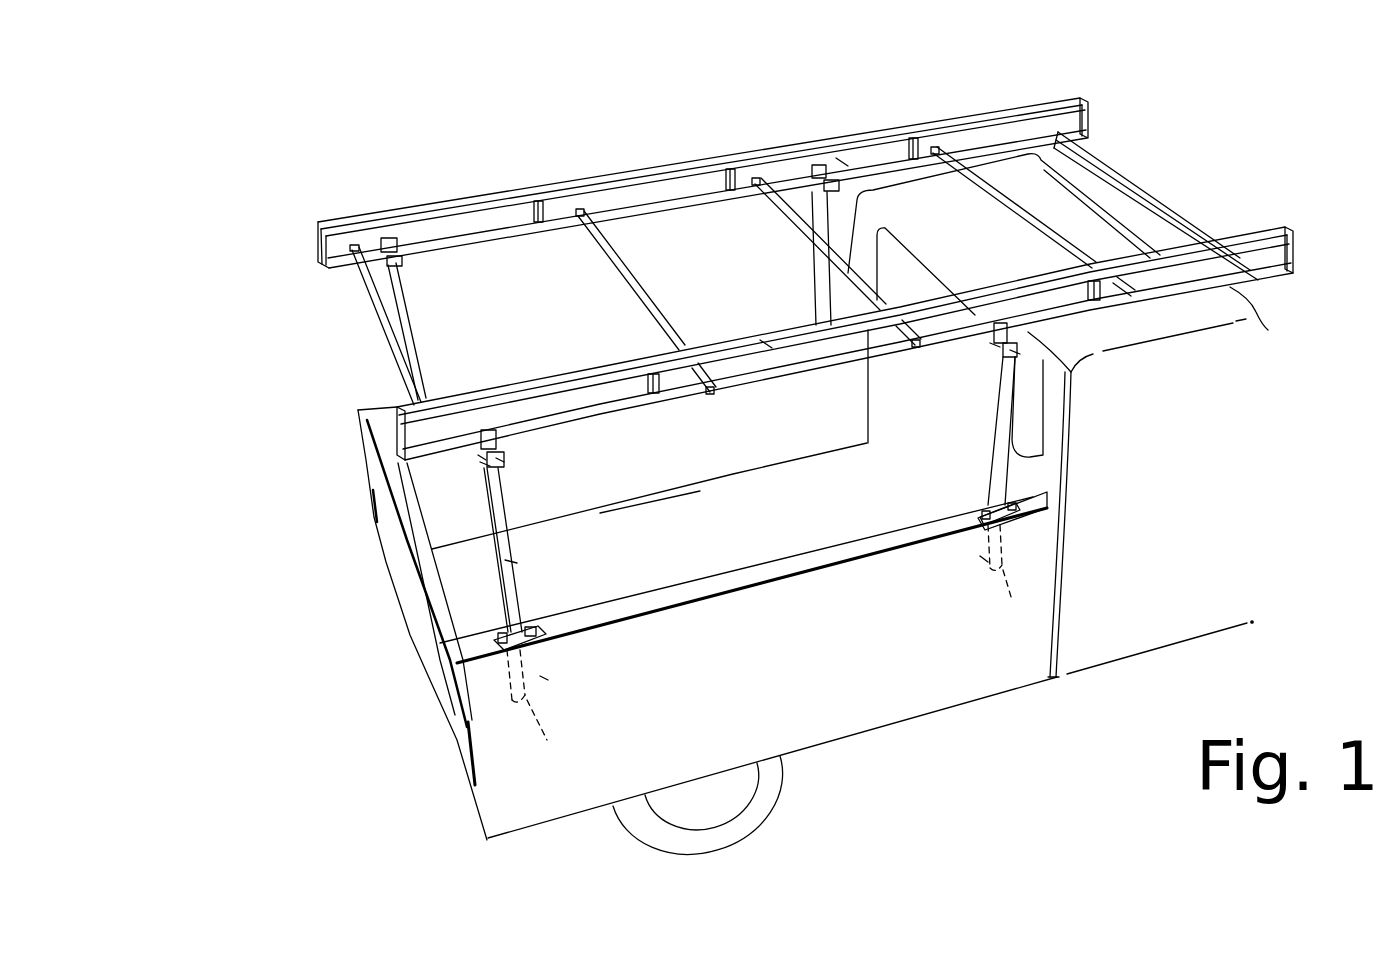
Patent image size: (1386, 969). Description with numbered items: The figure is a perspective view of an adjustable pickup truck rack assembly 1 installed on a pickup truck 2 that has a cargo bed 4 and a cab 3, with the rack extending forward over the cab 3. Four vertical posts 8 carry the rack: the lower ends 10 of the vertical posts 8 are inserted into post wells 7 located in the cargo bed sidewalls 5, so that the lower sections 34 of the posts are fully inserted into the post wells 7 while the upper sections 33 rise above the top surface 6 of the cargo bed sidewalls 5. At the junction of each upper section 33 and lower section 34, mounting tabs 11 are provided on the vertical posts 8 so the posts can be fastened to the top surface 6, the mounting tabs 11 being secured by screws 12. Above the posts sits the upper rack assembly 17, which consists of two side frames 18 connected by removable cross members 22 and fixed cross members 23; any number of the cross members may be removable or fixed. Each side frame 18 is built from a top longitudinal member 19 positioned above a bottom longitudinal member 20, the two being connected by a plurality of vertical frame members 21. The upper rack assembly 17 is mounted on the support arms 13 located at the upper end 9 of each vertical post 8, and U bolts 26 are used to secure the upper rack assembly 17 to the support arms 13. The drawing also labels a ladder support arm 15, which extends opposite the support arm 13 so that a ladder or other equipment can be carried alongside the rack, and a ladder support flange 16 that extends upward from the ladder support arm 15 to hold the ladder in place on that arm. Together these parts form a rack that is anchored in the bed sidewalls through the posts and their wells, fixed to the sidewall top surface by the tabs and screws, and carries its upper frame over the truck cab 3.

The adjustable pickup truck rack assembly 1 is at (1158, 108).
The pickup truck 2 is at (890, 688).
The cab 3 is at (1105, 636).
The cargo bed 4 is at (655, 555).
The cargo bed sidewalls 5 is at (792, 590).
The top surface 6 is at (728, 580).
The post wells 7 is at (524, 648).
The vertical posts 8 is at (398, 325).
The upper end 9 is at (983, 368).
The lower ends 10 is at (759, 649).
The mounting tabs 11 is at (500, 648).
The screws 12 is at (497, 637).
The support arms 13 is at (476, 461).
The ladder support arm 15 is at (484, 456).
The ladder support flange 16 is at (503, 461).
The upper rack assembly 17 is at (316, 235).
The side frames 18 is at (700, 150).
The top longitudinal member 19 is at (830, 165).
The bottom longitudinal member 20 is at (990, 146).
The vertical frame members 21 is at (542, 200).
The removable cross members 22 is at (627, 292).
The fixed cross members 23 is at (1147, 180).
The U bolts 26 is at (388, 240).
The upper sections 33 is at (520, 575).
The lower sections 34 is at (546, 680).